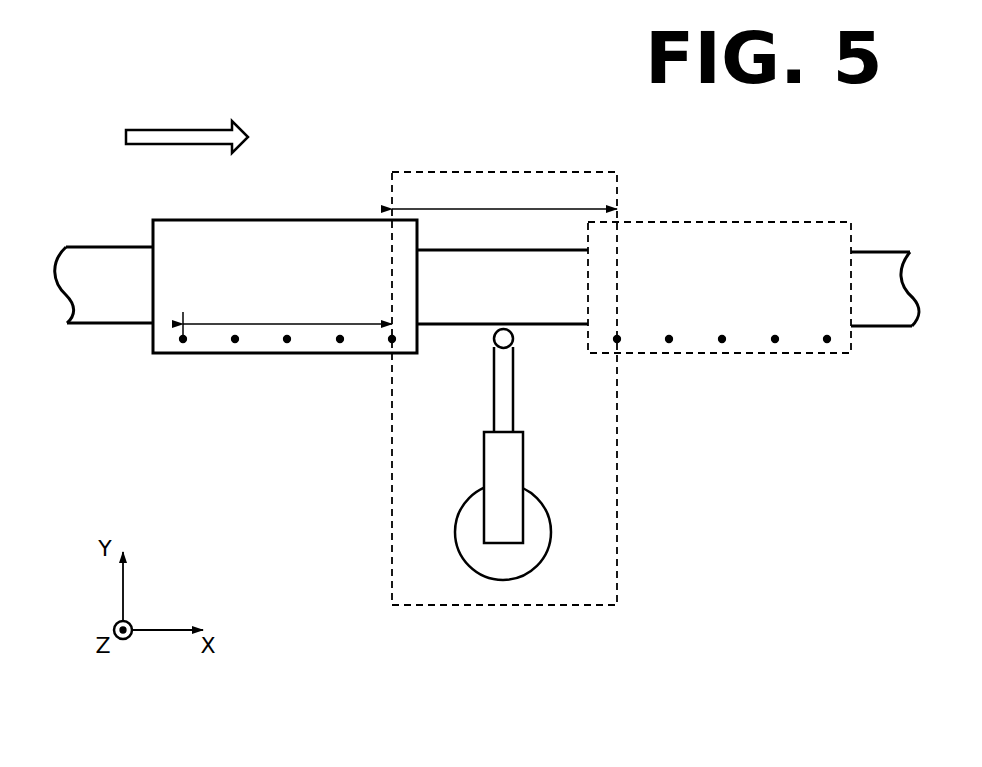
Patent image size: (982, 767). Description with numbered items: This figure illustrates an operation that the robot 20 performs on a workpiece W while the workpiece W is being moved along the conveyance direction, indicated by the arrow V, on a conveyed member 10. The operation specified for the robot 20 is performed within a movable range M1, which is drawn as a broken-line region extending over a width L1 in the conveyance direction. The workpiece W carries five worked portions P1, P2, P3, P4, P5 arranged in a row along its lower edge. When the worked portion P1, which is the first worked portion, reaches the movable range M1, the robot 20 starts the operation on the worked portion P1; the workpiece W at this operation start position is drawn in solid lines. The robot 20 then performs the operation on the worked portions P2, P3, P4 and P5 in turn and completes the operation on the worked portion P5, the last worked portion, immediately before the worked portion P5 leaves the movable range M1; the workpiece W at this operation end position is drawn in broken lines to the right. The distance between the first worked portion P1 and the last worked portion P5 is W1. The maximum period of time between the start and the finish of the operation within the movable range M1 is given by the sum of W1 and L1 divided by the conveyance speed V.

The strip / sheet being conveyed 10 is at (880, 252).
The robot 20 is at (540, 500).
The workpiece W is at (343, 219).
The movable range M1 is at (543, 172).
The width of the movable range L1 is at (504, 195).
The distance between first and last worked portions W1 is at (287, 317).
The conveyance speed V is at (188, 130).
The worked portion P1 is at (392, 343).
The worked portion P2 is at (340, 343).
The worked portion P3 is at (287, 343).
The worked portion P4 is at (235, 343).
The worked portion P5 is at (183, 343).